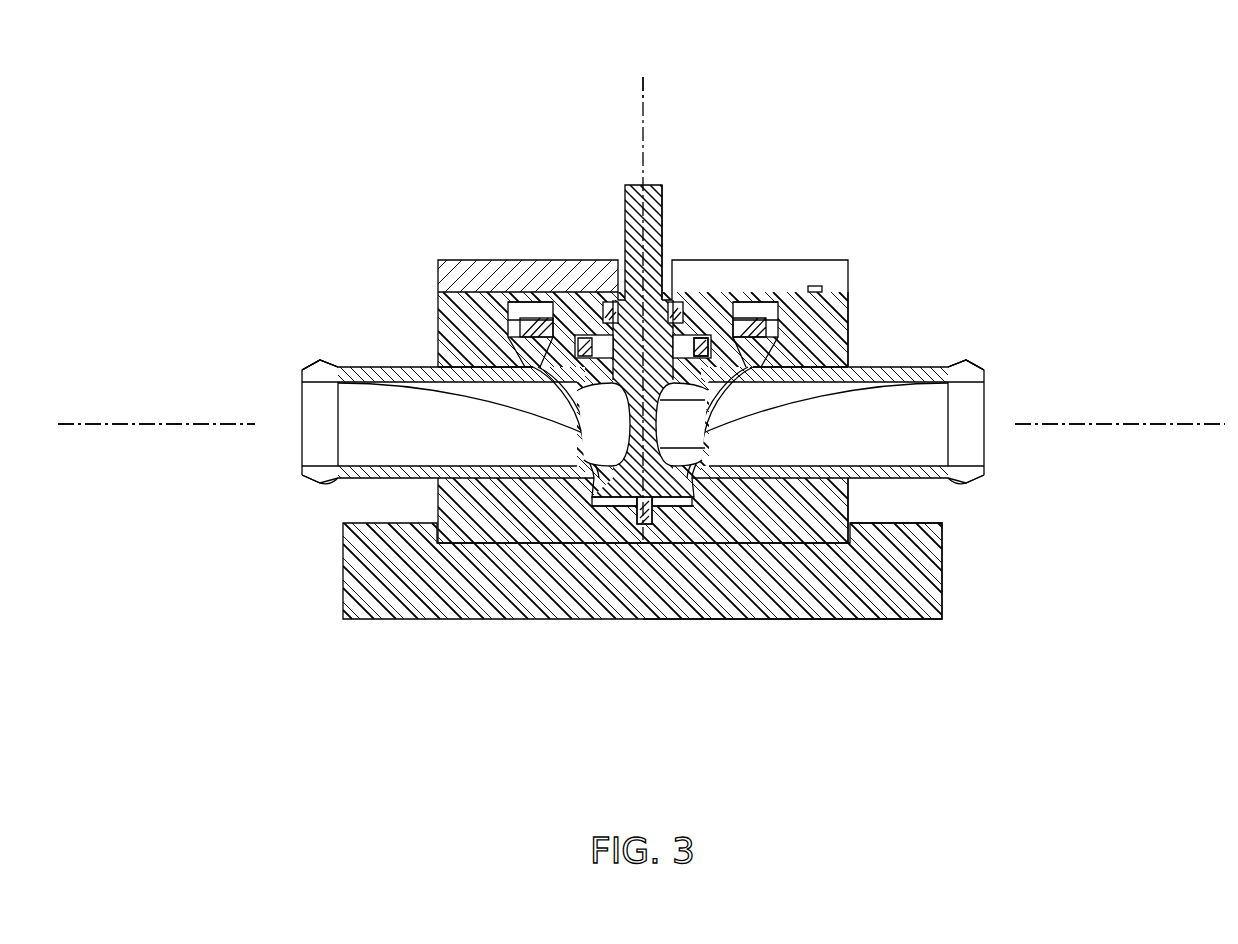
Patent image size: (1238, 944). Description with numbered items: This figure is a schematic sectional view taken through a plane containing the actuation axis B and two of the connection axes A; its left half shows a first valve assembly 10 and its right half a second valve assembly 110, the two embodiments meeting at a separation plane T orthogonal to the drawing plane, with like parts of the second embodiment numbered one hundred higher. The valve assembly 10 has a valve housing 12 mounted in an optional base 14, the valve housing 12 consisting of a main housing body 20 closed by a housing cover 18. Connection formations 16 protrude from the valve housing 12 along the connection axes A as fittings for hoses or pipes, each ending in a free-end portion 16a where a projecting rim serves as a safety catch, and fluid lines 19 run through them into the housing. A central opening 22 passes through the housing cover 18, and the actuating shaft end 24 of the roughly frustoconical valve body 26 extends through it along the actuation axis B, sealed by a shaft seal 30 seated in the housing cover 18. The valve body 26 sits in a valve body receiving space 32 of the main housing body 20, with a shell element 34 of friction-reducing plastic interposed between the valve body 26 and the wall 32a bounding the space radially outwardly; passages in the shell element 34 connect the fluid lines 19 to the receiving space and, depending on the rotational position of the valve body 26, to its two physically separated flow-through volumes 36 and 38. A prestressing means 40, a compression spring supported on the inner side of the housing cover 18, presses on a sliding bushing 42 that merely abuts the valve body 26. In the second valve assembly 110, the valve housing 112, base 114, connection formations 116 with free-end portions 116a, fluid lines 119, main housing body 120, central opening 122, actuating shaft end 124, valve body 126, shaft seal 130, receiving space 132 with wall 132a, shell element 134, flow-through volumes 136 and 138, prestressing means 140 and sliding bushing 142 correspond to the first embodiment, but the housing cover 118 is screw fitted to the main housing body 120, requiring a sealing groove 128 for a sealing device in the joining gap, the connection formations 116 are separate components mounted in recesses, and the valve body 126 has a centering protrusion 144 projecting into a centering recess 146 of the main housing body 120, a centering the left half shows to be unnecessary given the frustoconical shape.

The valve assembly 10 is at (205, 128).
The valve assembly 110 is at (1082, 130).
The valve housing 12 is at (438, 330).
The valve housing 112 is at (770, 350).
The base 14 is at (357, 598).
The base 114 is at (929, 598).
The connection formation 16 is at (401, 449).
The connection formation 116 is at (886, 449).
The pipe flared end 16a is at (322, 482).
The pipe flared end (right) 116a is at (964, 482).
The housing cover 18 is at (462, 292).
The housing cover 118 is at (797, 263).
The fluid line 19 is at (465, 419).
The fluid line 119 is at (821, 419).
The main housing body 20 is at (436, 308).
The main housing body 120 is at (852, 308).
The central opening 22 is at (615, 259).
The central opening 122 is at (673, 259).
The actuating shaft end 24 is at (628, 196).
The actuating shaft end 124 is at (660, 196).
The valve body 26 is at (621, 475).
The valve body 126 is at (668, 475).
The shaft seal 30 is at (541, 300).
The shaft seal 130 is at (728, 263).
The valve body receiving space 32 is at (492, 300).
The valve body receiving space 132 is at (758, 263).
The wall 32a is at (530, 305).
The wall 132a is at (747, 263).
The shell element 34 is at (470, 350).
The shell element 134 is at (818, 348).
The flow-through volume 36 is at (338, 372).
The flow-through volume 136 is at (966, 365).
The flow-through volume 38 is at (948, 372).
The flow-through volume 138 is at (320, 365).
The prestressing means 40 is at (438, 302).
The prestressing means 140 is at (815, 289).
The sliding bushing 42 is at (598, 424).
The sliding bushing 142 is at (688, 424).
The sealing groove 128 is at (775, 345).
The centering protrusion 144 is at (652, 524).
The centering recess 146 is at (644, 510).
The connection axis A is at (1118, 428).
The actuation axis B is at (645, 149).
The separation plane T is at (643, 77).